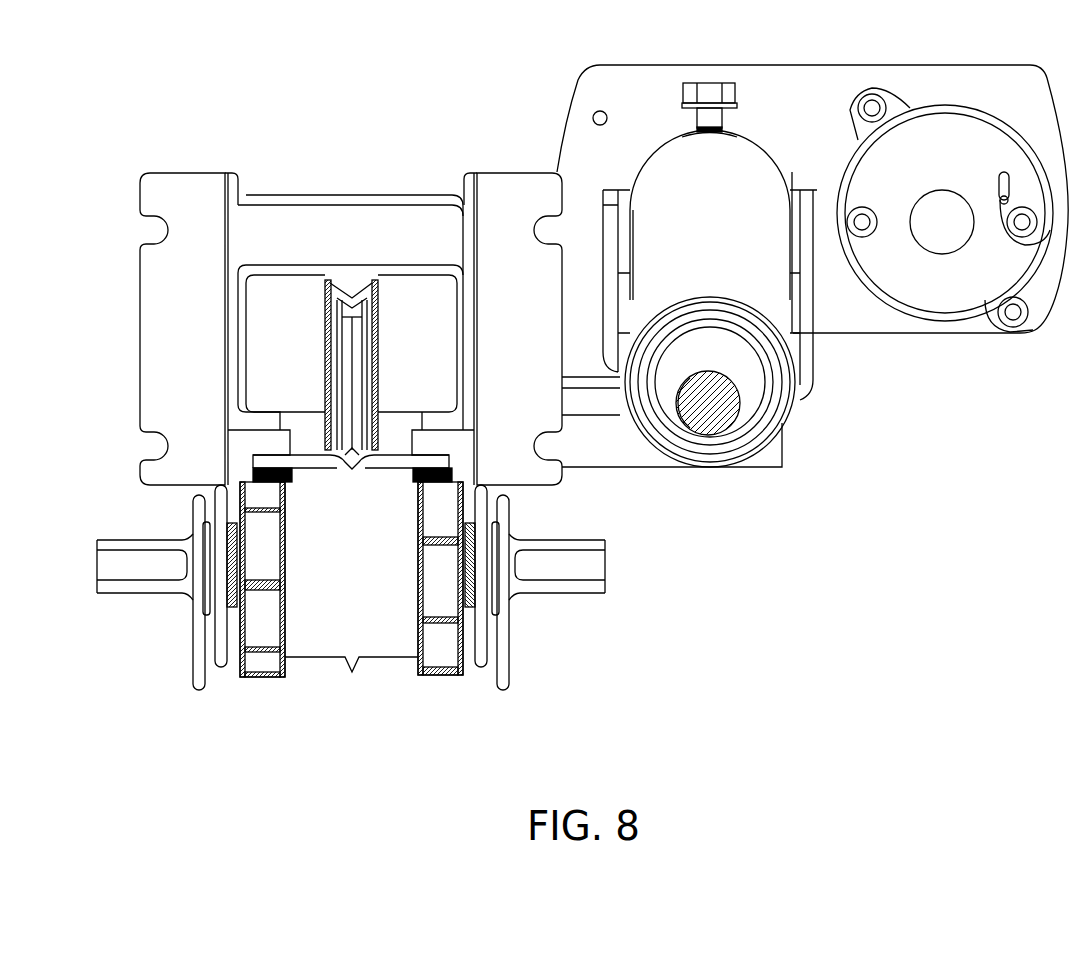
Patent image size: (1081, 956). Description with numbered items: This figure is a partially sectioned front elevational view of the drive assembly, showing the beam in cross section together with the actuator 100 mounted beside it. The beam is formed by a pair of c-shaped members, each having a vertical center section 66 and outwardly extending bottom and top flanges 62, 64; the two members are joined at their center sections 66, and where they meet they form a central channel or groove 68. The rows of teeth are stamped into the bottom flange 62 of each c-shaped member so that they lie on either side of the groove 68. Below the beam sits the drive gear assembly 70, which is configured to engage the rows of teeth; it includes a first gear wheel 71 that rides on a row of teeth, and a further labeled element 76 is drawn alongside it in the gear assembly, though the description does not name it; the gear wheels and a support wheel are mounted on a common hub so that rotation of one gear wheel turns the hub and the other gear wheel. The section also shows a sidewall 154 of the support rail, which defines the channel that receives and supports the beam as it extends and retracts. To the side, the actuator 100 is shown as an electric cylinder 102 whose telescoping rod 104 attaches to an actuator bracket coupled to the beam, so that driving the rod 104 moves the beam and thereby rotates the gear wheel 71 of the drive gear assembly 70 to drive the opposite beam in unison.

The bottom flange 62 is at (320, 466).
The top flange 64 is at (368, 286).
The vertical center section 66 is at (357, 408).
The central channel or groove 68 is at (352, 458).
The drive gear assembly 70 is at (230, 698).
The first gear wheel 71 is at (453, 661).
The bearing 76 is at (275, 674).
The actuator 100 is at (790, 84).
The electric cylinder 102 is at (723, 226).
The telescoping rod 104 is at (735, 416).
The sidewall 154 is at (477, 297).